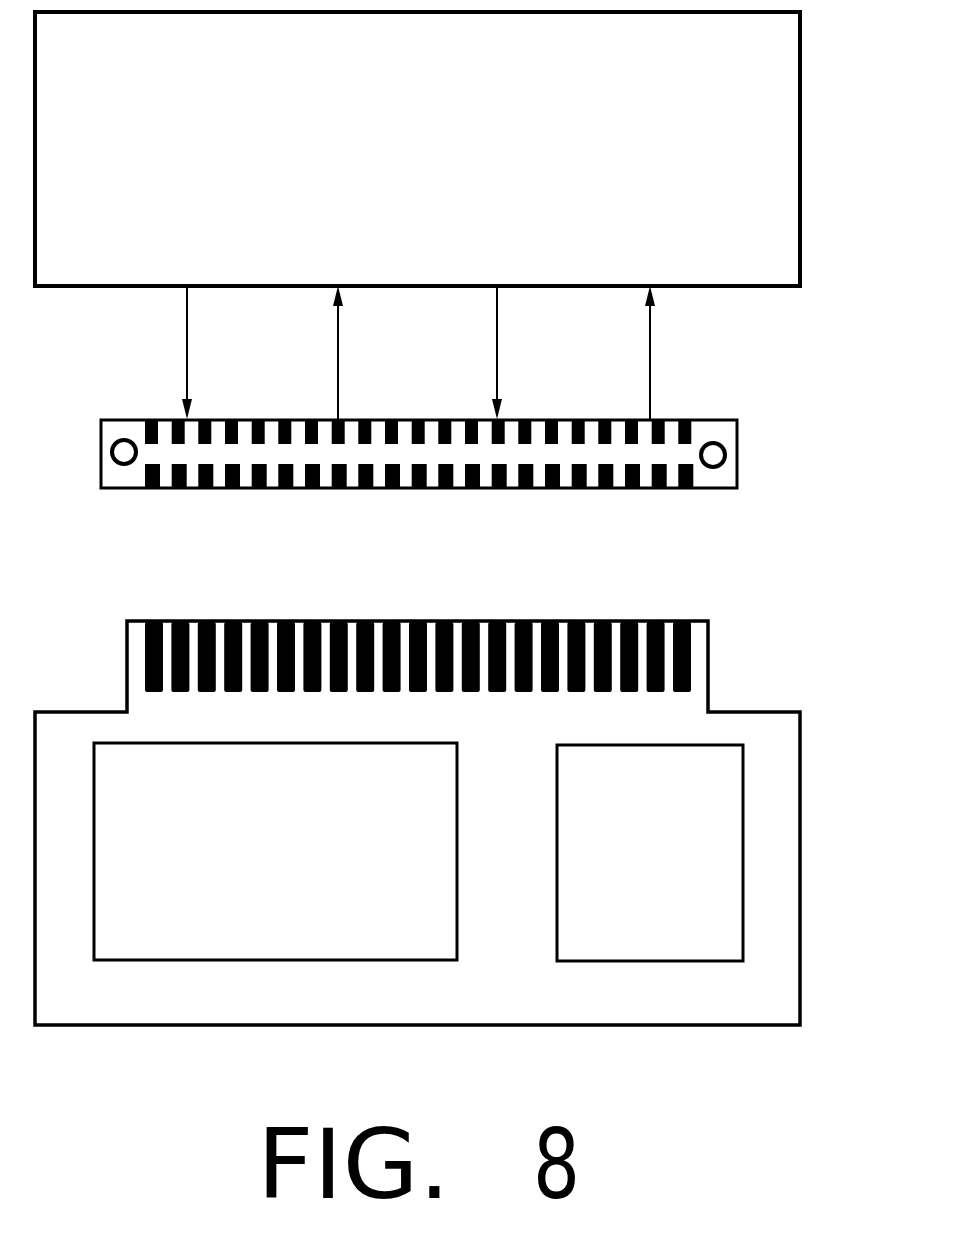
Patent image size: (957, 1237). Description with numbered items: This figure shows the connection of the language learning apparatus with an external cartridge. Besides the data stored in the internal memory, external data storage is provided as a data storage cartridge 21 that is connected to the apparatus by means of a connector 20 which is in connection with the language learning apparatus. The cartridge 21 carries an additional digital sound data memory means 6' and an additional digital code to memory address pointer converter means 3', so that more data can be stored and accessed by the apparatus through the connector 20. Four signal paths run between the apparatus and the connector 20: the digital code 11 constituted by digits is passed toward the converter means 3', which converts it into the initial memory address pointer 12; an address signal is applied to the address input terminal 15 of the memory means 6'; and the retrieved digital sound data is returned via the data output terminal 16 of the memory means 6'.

The digital code 11 is at (187, 310).
The initial memory address pointer 12 is at (338, 327).
The address input terminal 15 is at (497, 313).
The data output terminal 16 is at (650, 321).
The connector 20 is at (737, 432).
The data storage cartridge 21 is at (800, 790).
The digital code to memory address pointer converter means 3' is at (311, 851).
The digital sound data memory means 6' is at (675, 853).